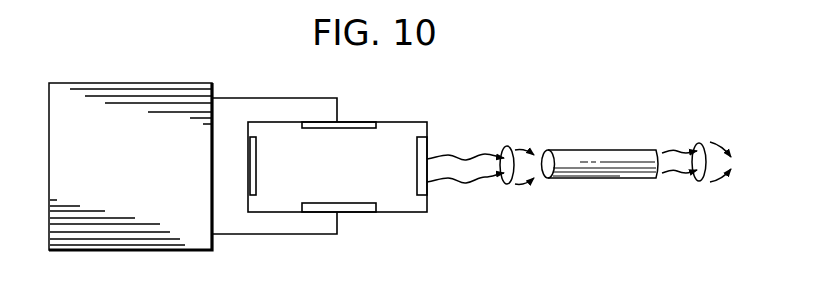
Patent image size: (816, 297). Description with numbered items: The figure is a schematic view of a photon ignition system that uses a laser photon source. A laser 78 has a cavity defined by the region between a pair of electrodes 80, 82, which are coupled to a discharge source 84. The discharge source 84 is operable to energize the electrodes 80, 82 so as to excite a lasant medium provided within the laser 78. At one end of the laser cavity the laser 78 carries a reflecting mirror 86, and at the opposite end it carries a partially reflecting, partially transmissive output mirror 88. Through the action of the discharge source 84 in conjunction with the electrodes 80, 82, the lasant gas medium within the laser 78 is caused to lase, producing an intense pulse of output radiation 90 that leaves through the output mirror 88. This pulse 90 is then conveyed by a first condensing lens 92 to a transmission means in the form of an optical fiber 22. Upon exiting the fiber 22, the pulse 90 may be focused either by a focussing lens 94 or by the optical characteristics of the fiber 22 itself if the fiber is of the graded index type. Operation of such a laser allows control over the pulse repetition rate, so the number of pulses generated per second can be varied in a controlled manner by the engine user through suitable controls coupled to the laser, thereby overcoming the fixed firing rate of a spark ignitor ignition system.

The optical fiber 22 is at (573, 150).
The laser 78 is at (406, 122).
The electrode 80 is at (353, 123).
The electrode 82 is at (353, 207).
The discharge source 84 is at (112, 252).
The reflecting mirror 86 is at (258, 172).
The output mirror 88 is at (413, 170).
The output radiation 90 is at (459, 153).
The focusing lens 92 is at (502, 184).
The focussing lens 94 is at (697, 183).